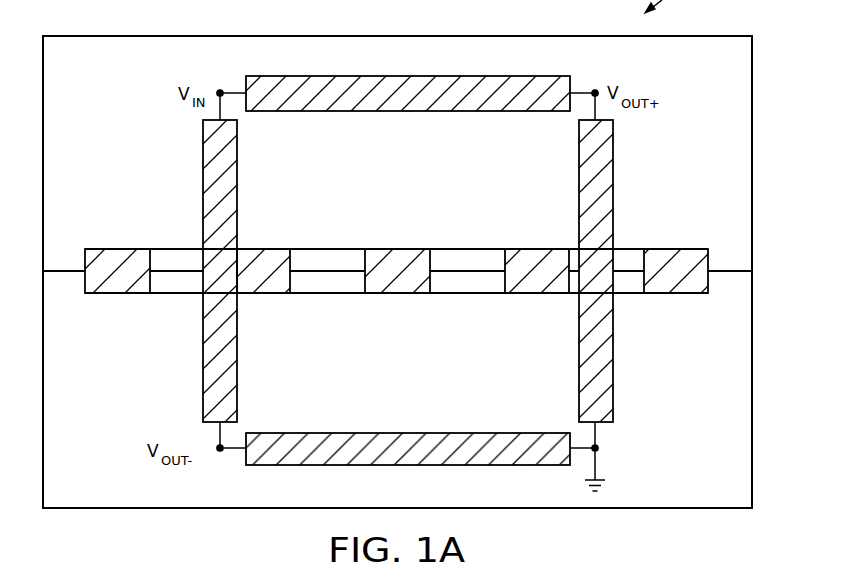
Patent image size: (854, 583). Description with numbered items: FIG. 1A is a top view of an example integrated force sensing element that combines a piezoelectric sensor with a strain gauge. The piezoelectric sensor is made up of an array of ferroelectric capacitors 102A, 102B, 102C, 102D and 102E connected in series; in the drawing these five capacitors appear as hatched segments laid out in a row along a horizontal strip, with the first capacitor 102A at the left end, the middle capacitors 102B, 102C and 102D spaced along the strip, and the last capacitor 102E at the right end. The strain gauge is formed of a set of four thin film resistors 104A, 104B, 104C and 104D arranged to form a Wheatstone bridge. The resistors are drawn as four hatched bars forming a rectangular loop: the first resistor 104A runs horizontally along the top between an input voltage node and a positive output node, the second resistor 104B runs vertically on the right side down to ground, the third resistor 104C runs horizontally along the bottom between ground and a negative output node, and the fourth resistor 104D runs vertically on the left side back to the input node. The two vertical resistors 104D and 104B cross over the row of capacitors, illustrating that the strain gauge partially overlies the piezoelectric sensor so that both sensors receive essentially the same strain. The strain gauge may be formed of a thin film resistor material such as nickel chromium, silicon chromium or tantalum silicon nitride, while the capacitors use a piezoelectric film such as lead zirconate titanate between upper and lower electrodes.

The ferroelectric capacitor 102A is at (117, 256).
The ferroelectric capacitor 102B is at (263, 256).
The ferroelectric capacitor 102C is at (395, 256).
The ferroelectric capacitor 102D is at (536, 256).
The ferroelectric capacitor 102E is at (677, 256).
The thin film resistor 104A is at (410, 100).
The thin film resistor 104B is at (604, 358).
The thin film resistor 104C is at (409, 440).
The thin film resistor 104D is at (212, 358).